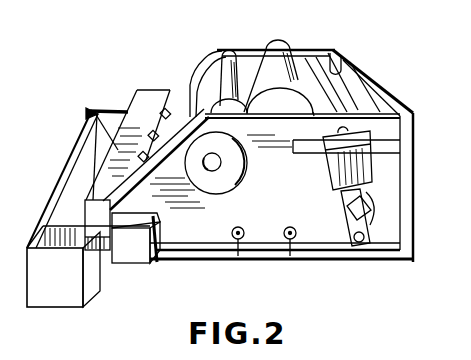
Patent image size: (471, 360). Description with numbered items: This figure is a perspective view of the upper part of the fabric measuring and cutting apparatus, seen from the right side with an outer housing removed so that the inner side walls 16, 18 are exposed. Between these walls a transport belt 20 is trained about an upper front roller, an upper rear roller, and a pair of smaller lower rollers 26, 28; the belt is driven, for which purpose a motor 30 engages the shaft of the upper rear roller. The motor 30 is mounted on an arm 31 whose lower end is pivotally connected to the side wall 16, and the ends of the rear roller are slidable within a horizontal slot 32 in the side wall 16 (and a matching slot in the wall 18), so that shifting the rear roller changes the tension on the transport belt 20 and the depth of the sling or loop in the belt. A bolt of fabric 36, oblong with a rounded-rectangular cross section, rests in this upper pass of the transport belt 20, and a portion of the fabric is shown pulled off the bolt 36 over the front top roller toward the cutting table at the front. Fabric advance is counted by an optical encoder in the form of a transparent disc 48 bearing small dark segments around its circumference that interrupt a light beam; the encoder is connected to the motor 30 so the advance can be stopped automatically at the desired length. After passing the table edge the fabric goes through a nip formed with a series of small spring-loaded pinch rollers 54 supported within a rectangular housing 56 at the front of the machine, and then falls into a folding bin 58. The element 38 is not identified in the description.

The inner side wall 16 is at (398, 197).
The inner side wall 18 is at (247, 58).
The transport belt 20 is at (340, 82).
The lower roller 26 is at (239, 262).
The lower roller 28 is at (292, 262).
The motor 30 is at (338, 172).
The arm 31 is at (345, 215).
The horizontal slot 32 is at (393, 143).
The bolt of fabric 36 is at (287, 48).
The curved guide 38 is at (198, 67).
The transparent disc 48 is at (225, 176).
The pinch rollers 54 is at (152, 132).
The rectangular housing 56 is at (93, 108).
The folding bin 58 is at (80, 168).